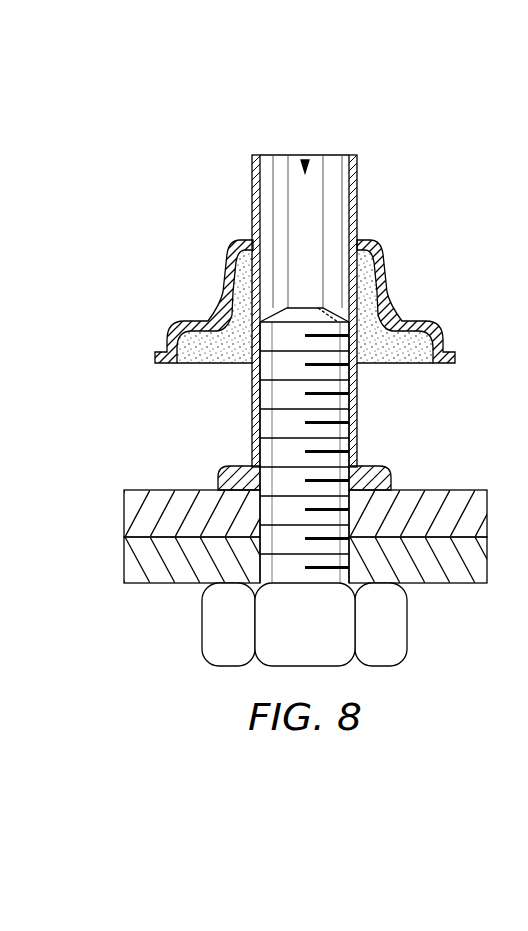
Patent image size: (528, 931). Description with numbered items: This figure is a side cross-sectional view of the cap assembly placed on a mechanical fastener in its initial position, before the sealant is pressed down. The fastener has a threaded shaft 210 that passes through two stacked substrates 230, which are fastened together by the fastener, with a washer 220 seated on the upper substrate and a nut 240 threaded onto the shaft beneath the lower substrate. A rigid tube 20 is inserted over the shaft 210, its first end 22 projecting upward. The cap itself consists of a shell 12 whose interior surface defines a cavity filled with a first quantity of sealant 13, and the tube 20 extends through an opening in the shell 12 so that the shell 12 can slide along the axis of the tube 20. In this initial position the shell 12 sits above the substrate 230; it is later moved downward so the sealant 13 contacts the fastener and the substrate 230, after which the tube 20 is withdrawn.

The shell 12 is at (383, 267).
The first quantity of sealant 13 is at (220, 353).
The tube 20 is at (318, 210).
The first end 22 is at (306, 163).
The shaft 210 is at (283, 420).
The washer 220 is at (377, 473).
The substrate 230 is at (167, 497).
The nut 240 is at (390, 618).